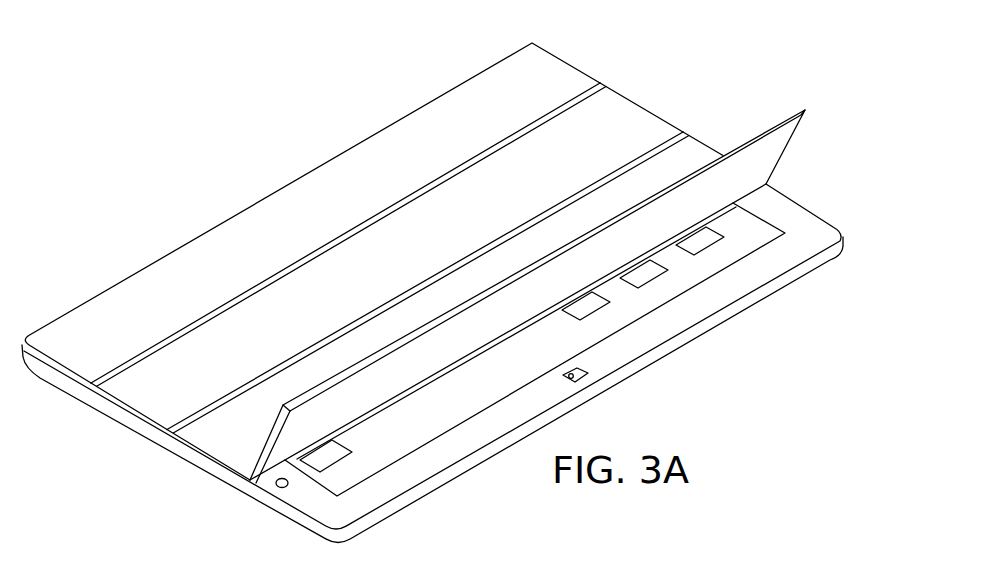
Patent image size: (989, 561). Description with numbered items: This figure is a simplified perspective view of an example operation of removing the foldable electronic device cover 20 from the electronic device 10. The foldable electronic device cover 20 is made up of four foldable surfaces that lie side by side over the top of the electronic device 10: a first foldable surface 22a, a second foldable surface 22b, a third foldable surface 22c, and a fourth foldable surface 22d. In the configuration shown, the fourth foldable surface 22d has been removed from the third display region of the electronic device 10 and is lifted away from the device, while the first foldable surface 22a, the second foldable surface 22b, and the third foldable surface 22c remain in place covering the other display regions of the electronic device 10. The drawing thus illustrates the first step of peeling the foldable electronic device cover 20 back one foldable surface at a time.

The electronic device 10 is at (738, 325).
The foldable electronic device cover 20 is at (445, 246).
The first foldable surface 22a is at (567, 72).
The second foldable surface 22b is at (640, 112).
The third foldable surface 22c is at (705, 150).
The fourth foldable surface 22d is at (782, 137).